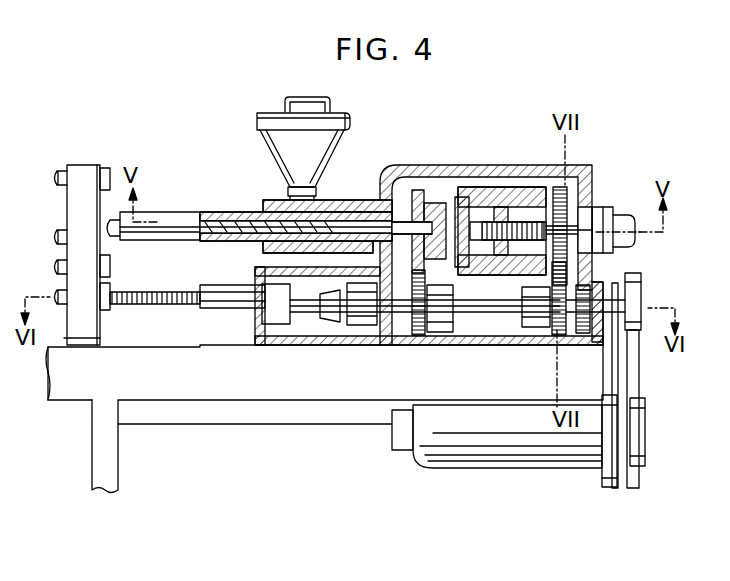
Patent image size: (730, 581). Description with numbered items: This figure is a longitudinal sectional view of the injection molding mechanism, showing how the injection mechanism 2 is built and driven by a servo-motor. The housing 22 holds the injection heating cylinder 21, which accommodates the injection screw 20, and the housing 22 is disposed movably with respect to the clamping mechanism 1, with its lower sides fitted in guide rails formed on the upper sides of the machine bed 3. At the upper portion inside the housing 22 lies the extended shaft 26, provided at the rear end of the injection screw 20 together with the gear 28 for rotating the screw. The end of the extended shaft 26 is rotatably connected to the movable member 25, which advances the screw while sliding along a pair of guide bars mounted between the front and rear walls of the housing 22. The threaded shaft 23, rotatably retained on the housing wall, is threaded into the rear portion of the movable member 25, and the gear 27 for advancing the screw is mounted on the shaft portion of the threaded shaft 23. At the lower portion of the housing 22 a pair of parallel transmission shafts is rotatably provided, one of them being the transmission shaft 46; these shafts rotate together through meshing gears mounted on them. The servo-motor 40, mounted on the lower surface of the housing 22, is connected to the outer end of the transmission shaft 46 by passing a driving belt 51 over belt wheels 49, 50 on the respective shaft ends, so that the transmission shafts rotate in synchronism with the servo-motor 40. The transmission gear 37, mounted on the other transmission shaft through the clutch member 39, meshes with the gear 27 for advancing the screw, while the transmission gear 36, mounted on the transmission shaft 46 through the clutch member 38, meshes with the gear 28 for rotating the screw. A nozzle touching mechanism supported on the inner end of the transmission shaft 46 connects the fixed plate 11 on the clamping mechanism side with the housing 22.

The clamping mechanism 1 is at (67, 212).
The injection mechanism 2 is at (251, 201).
The machine bed 3 is at (103, 440).
The fixed plate 11 is at (82, 183).
The injection screw 20 is at (212, 212).
The injection heating cylinder 21 is at (162, 218).
The housing 22 is at (405, 165).
The threaded shaft 23 is at (520, 215).
The movable member 25 is at (497, 205).
The extended shaft 26 is at (462, 212).
The gear for advancing the screw 27 is at (585, 190).
The gear for rotating the screw 28 is at (428, 192).
The transmission gear 36 is at (410, 335).
The transmission gear 37 is at (557, 338).
The clutch member 38 is at (440, 333).
The clutch member 39 is at (525, 328).
The servo-motor 40 is at (475, 445).
The transmission shaft 46 is at (480, 312).
The belt wheel 49 is at (645, 290).
The belt wheel 50 is at (640, 438).
The driving belt 51 is at (633, 380).